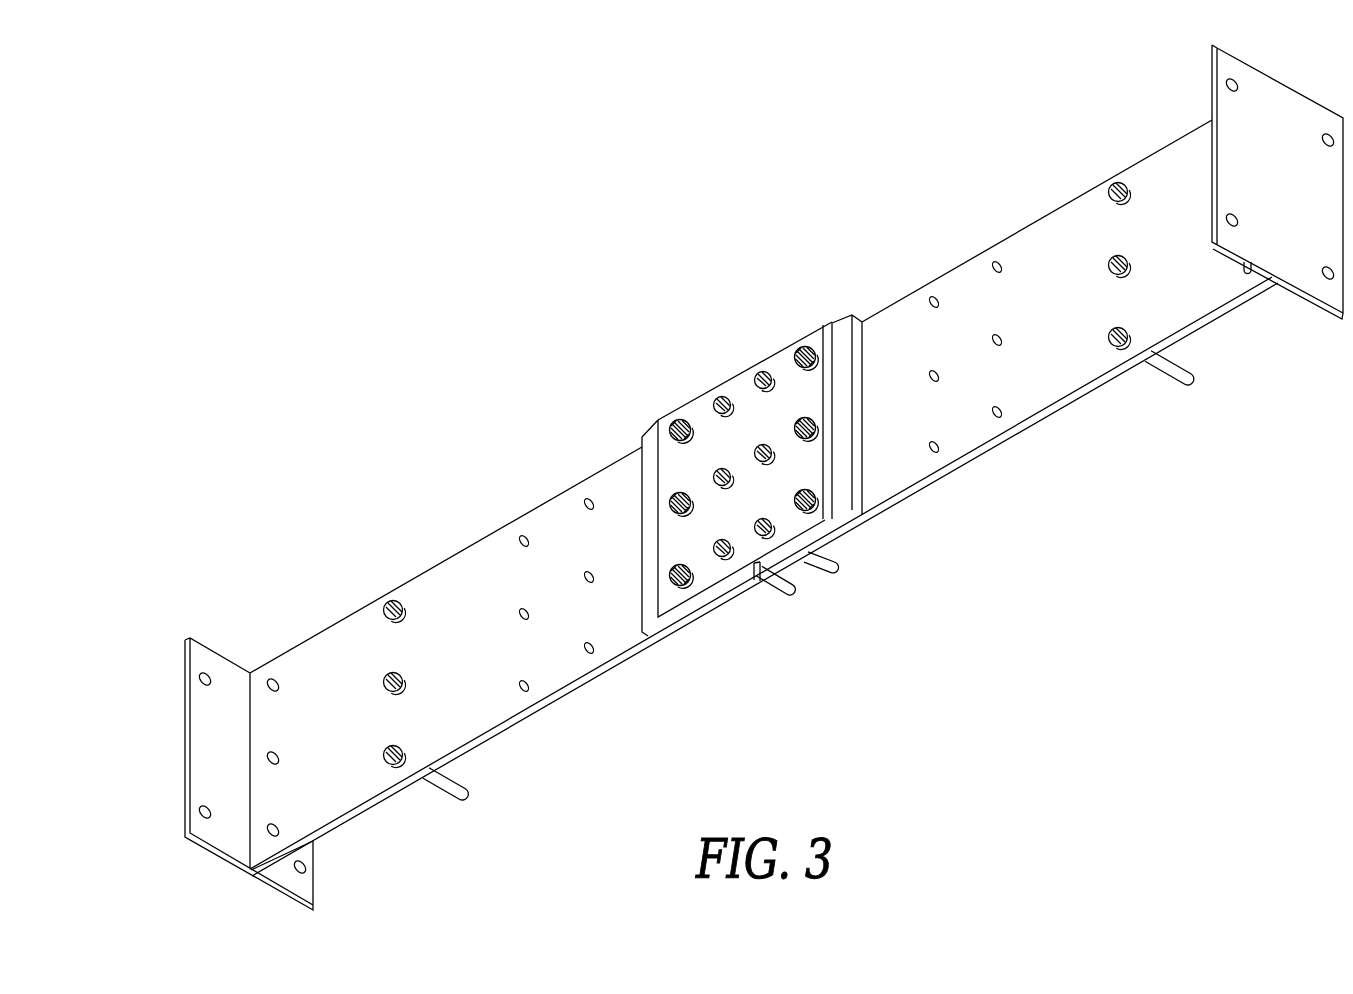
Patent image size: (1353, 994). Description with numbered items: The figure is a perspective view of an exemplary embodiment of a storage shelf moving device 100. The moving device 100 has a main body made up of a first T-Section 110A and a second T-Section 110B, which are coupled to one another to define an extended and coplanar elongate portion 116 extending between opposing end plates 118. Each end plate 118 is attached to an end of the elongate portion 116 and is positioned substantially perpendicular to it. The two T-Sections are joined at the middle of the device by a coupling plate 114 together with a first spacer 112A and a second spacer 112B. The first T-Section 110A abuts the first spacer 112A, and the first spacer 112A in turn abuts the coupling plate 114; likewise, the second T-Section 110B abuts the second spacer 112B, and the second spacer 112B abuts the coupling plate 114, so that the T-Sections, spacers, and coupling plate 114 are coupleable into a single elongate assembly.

The storage shelf moving device 100 is at (734, 472).
The first T-Section 110A is at (471, 556).
The second T-Section 110B is at (1045, 216).
The first spacer 112A is at (645, 432).
The second spacer 112B is at (843, 316).
The coupling plate 114 is at (738, 383).
The elongate portion 116 is at (345, 640).
The end plate 118 is at (182, 732).